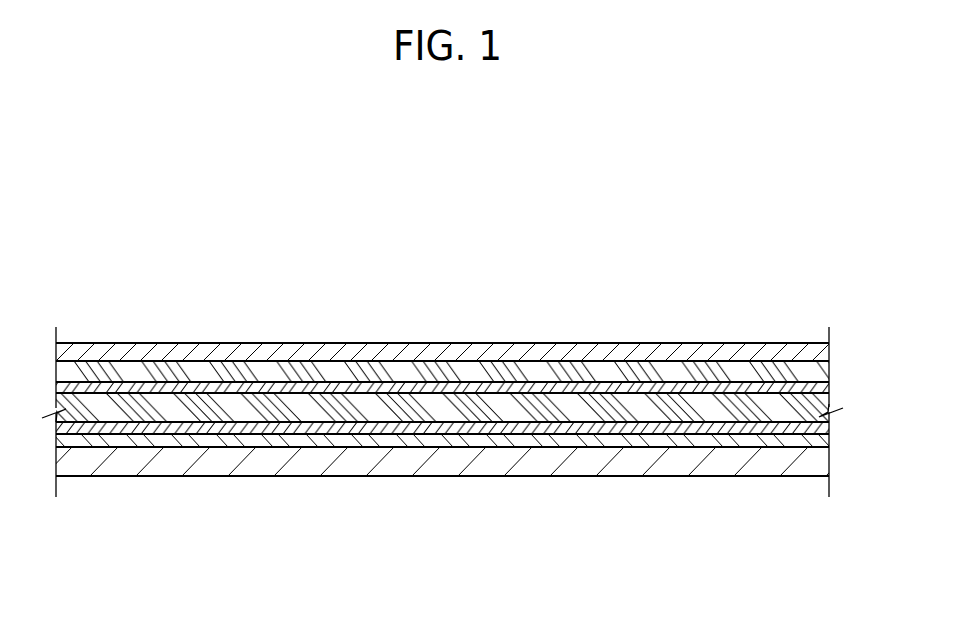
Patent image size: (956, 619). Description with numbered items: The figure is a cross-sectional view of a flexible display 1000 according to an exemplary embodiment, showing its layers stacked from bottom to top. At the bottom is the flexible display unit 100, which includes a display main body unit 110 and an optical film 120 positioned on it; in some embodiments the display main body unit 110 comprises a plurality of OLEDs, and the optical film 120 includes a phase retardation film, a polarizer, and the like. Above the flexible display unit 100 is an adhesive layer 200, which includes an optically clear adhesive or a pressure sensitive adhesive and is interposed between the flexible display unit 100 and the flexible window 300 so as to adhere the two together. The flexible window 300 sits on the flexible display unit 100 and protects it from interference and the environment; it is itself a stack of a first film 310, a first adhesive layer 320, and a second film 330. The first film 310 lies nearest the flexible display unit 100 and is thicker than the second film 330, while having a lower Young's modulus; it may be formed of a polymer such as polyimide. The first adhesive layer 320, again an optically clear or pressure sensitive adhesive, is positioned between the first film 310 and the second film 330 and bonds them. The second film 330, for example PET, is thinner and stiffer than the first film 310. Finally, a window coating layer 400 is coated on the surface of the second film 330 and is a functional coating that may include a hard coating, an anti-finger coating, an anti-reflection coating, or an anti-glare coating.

The flexible display 1000 is at (224, 202).
The flexible display unit 100 is at (660, 552).
The display main body unit 110 is at (638, 463).
The optical film 120 is at (548, 442).
The adhesive layer 200 is at (457, 428).
The flexible window 300 is at (625, 266).
The first film 310 is at (607, 410).
The first adhesive layer 320 is at (537, 390).
The second film 330 is at (466, 372).
The window coating layer 400 is at (358, 343).